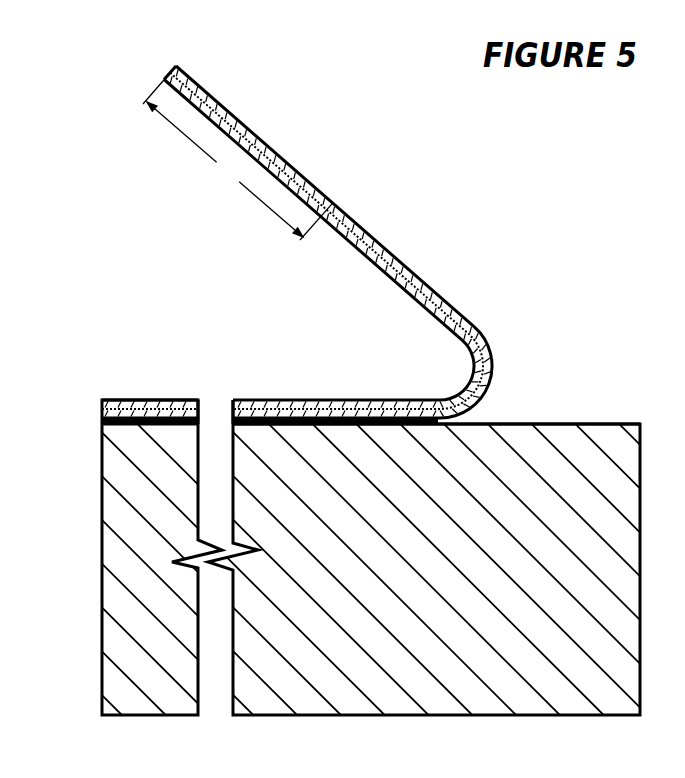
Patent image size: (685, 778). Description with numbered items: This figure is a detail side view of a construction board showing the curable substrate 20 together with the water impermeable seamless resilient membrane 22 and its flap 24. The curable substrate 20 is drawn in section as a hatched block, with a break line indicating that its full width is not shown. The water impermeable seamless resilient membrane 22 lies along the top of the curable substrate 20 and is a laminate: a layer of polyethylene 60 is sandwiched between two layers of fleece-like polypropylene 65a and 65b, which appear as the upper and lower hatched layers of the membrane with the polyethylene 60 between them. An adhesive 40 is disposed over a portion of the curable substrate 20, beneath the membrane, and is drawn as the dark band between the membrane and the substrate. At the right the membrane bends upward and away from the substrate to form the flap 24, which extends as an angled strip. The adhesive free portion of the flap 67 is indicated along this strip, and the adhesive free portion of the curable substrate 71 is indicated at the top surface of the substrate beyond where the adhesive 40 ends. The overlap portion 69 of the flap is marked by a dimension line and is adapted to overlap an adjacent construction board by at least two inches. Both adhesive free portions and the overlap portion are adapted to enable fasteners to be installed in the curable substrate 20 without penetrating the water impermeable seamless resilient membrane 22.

The curable substrate 20 is at (452, 716).
The water impermeable seamless resilient membrane 22 is at (120, 408).
The flap 24 is at (328, 235).
The adhesive 40 is at (102, 420).
The polyethylene 60 is at (198, 405).
The layer of fleece-like polypropylene 65a is at (102, 402).
The layer of fleece-like polypropylene 65b is at (102, 413).
The adhesive free portion of the flap 67 is at (279, 155).
The overlap portion 69 is at (238, 153).
The adhesive free portion of the curable substrate 71 is at (598, 423).